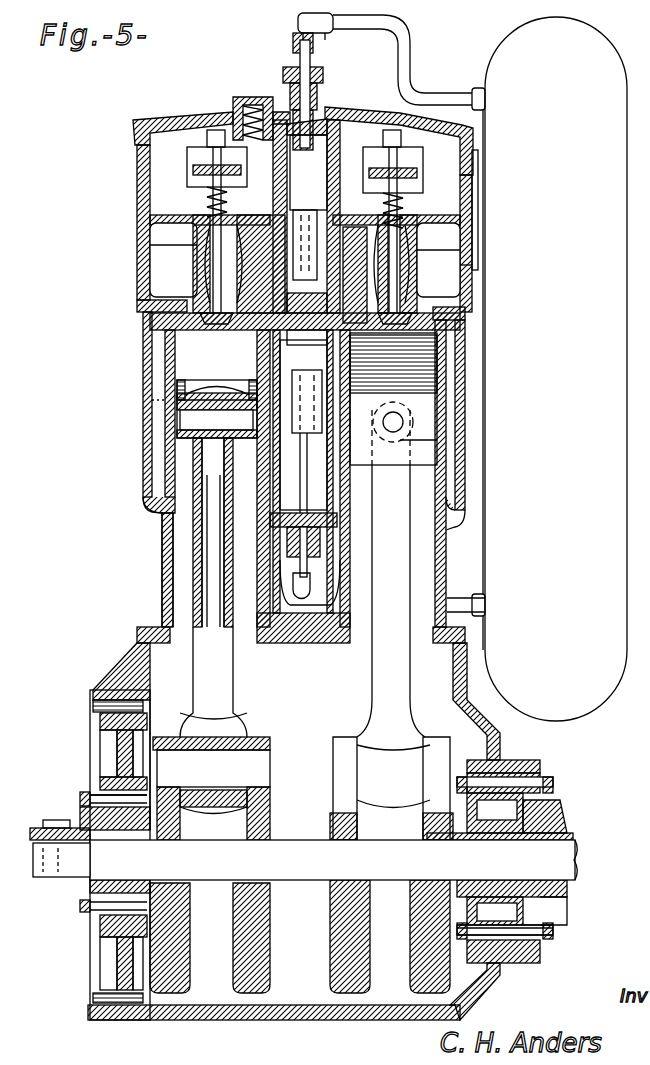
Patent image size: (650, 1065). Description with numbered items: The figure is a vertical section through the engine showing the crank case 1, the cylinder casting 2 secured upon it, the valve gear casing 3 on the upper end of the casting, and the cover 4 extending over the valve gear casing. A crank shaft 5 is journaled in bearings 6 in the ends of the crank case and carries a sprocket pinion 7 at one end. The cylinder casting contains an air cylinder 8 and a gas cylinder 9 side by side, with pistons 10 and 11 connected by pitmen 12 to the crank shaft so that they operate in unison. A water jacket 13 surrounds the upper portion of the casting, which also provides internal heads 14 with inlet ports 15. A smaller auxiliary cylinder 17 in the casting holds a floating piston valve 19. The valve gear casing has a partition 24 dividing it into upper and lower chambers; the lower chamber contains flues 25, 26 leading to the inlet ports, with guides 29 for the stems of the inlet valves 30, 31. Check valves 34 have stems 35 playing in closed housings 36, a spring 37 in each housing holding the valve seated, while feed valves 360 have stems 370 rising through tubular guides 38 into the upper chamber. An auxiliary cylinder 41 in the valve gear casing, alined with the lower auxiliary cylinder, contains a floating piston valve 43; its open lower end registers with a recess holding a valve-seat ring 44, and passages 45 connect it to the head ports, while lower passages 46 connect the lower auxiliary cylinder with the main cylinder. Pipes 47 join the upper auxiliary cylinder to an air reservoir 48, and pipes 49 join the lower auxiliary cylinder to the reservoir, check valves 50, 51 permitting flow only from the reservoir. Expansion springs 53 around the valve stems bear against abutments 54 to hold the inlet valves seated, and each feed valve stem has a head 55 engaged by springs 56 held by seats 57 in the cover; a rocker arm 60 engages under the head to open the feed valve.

The crank case 1 is at (213, 995).
The cylinder casting 2 is at (162, 565).
The valve gear casing 3 is at (137, 242).
The cover 4 is at (150, 105).
The crank shaft 5 is at (575, 842).
The bearings 6 is at (82, 903).
The sprocket pinion 7 is at (50, 820).
The air cylinder 8 is at (162, 497).
The gas cylinder 9 is at (450, 560).
The piston 10 is at (165, 358).
The piston 11 is at (420, 448).
The pitmen 12 is at (233, 672).
The water jacket 13 is at (143, 386).
The internal heads 14 is at (143, 330).
The inlet ports 15 is at (205, 310).
The auxiliary cylinder 17 is at (305, 473).
The floating piston valve 19 is at (303, 425).
The partition 24 is at (418, 228).
The flue 25 is at (450, 262).
The flue 26 is at (150, 268).
The guides 29 is at (205, 270).
The inlet valve 30 is at (437, 360).
The inlet valve 31 is at (152, 340).
The check valves 34 is at (388, 425).
The stem 35 is at (398, 268).
The closed housing 36 is at (355, 227).
The spring 37 is at (400, 248).
The tubular guides 38 is at (173, 243).
The auxiliary cylinder 41 is at (320, 150).
The floating piston valve 43 is at (305, 245).
The valve-seat rings 44 is at (307, 297).
The passages 45 is at (307, 339).
The passages 46 is at (205, 393).
The pipes 47 is at (448, 93).
The air reservoir 48 is at (556, 369).
The pipes 49 is at (470, 605).
The check valve 50 is at (340, 515).
The check valve 51 is at (338, 120).
The expansion springs 53 is at (475, 195).
The abutments 54 is at (190, 170).
The heads 55 is at (326, 135).
The springs 56 is at (243, 100).
The seats 57 is at (258, 98).
The rocker arm 60 is at (306, 216).
The feed valves 360 is at (217, 372).
The stems 370 is at (309, 172).